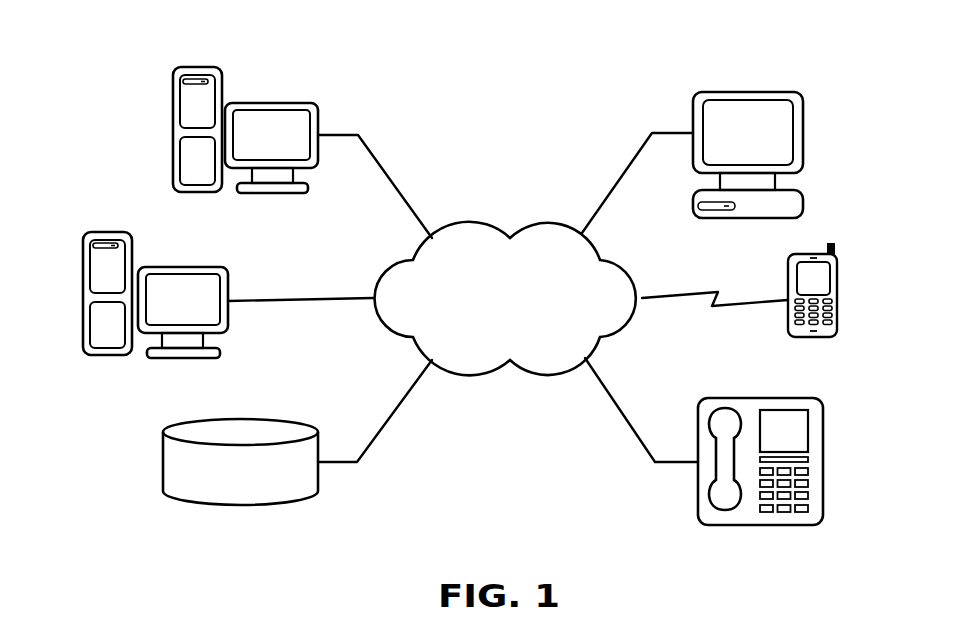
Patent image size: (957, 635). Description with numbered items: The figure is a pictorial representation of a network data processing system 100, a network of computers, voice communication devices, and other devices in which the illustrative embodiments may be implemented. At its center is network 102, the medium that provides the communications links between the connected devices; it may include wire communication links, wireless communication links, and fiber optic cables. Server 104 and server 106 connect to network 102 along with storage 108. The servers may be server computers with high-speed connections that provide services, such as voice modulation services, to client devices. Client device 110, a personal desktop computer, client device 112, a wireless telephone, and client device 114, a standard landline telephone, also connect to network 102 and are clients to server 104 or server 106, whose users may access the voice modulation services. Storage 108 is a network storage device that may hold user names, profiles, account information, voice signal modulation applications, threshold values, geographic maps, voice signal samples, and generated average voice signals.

The network data processing system 100 is at (655, 60).
The network 102 is at (375, 277).
The server 104 is at (173, 95).
The server 106 is at (83, 260).
The storage 108 is at (163, 462).
The client device 110 is at (803, 133).
The client device 112 is at (837, 280).
The client device 114 is at (823, 440).